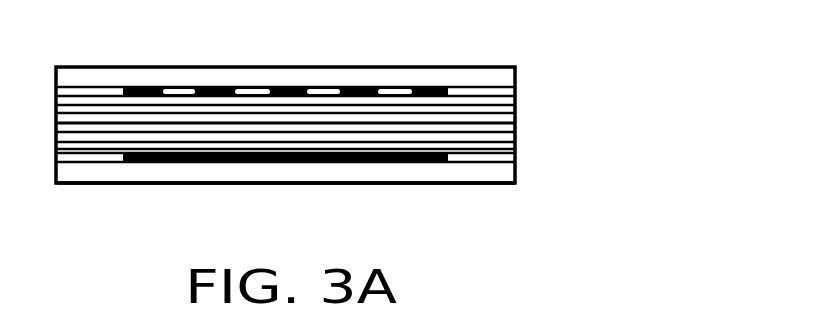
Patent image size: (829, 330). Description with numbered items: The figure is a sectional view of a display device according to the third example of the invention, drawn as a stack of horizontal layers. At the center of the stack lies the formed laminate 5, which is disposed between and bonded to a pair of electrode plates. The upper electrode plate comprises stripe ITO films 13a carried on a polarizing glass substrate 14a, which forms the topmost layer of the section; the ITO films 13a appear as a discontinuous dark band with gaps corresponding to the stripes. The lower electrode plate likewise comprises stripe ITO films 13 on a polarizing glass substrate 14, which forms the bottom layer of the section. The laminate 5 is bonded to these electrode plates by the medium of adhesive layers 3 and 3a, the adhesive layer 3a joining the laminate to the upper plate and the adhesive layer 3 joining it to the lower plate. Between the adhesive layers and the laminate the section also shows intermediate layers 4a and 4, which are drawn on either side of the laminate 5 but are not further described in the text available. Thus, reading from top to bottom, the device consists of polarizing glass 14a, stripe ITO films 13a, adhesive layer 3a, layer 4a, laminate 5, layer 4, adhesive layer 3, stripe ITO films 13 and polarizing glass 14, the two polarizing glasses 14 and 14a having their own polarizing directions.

The polarizing glass substrate 14a is at (487, 72).
The stripe ITO films 13a is at (517, 88).
The adhesive layer 3a is at (517, 100).
The upper adhesive layer 4a is at (517, 113).
The laminate 5 is at (517, 125).
The lower adhesive layer 4 is at (518, 143).
The adhesive layer 3 is at (500, 152).
The stripe ITO films 13 is at (470, 160).
The polarizing glass substrate 14 is at (418, 172).